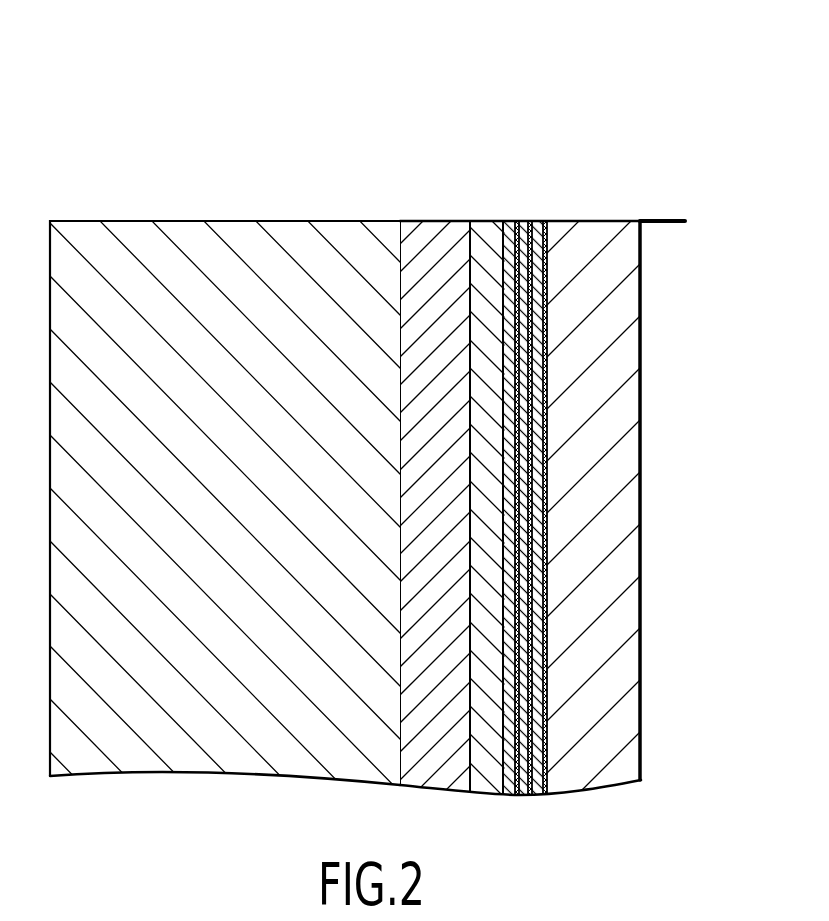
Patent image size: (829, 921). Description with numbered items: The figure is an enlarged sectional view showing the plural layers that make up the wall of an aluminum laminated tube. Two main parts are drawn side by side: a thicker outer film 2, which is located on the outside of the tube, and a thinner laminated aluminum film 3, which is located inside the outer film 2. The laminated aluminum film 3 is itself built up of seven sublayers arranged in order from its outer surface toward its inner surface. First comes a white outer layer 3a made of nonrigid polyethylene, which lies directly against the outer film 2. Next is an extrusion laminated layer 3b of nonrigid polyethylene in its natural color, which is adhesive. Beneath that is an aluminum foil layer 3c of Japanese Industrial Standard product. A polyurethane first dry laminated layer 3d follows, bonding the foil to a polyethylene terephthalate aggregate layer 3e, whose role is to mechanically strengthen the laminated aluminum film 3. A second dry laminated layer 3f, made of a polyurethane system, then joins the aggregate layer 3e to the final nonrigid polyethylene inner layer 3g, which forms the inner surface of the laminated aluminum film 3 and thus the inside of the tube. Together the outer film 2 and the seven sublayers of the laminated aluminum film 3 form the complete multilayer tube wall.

The outer film 2 is at (232, 221).
The laminated aluminum film 3 is at (541, 441).
The outer layer 3a is at (438, 221).
The extrusion laminated layer 3b is at (487, 221).
The aluminum foil layer 3c is at (508, 221).
The first dry laminated layer 3d is at (518, 221).
The aggregate layer 3e is at (530, 221).
The second dry laminated layer 3f is at (543, 221).
The inner layer 3g is at (595, 483).